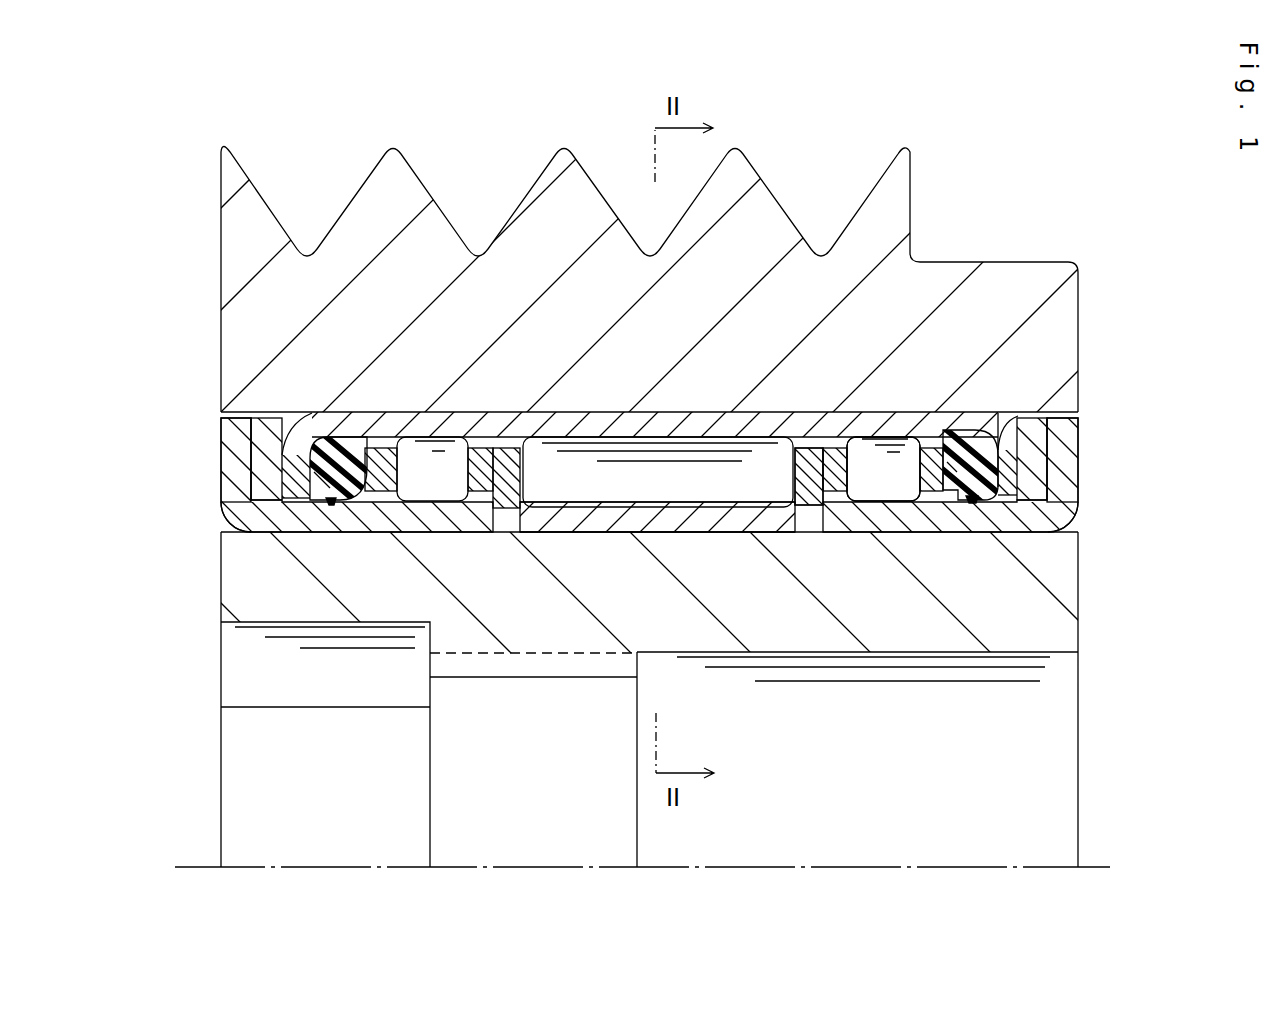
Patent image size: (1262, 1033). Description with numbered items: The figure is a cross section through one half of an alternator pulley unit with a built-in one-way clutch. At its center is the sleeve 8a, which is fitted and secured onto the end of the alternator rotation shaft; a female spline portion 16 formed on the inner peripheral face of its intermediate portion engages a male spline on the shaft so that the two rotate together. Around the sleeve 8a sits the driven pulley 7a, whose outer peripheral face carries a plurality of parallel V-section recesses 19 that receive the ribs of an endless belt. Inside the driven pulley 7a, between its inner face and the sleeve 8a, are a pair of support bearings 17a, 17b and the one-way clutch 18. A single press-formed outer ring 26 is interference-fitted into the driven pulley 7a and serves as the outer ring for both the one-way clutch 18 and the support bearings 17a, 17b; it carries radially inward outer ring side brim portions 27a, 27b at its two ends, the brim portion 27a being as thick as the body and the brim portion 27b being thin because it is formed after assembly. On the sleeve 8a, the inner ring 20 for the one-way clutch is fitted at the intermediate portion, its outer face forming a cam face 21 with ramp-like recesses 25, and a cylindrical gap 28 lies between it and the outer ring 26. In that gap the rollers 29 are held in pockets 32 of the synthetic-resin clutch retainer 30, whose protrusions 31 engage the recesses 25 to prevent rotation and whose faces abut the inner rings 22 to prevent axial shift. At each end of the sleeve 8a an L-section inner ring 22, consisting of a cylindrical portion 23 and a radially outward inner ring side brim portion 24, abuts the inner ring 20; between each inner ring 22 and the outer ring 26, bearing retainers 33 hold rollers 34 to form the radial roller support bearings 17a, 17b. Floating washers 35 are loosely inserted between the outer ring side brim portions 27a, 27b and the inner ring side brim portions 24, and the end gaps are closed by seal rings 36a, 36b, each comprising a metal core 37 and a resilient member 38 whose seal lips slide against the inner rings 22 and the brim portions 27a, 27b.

The driven pulley 7a is at (903, 223).
The recesses 19 is at (260, 192).
The support bearing 17a is at (408, 414).
The pockets 32 is at (790, 470).
The cylindrical portion 23 is at (422, 514).
The inner ring side brim portion 24 is at (235, 447).
The inner rings 22 is at (233, 502).
The floating washers 35 is at (267, 500).
The outer ring side brim portion 27a is at (303, 420).
The outer ring side brim portion 27b is at (1012, 442).
The seal ring 36a is at (333, 420).
The seal ring 36b is at (962, 424).
The metal core 37 is at (330, 422).
The resilient member 38 is at (332, 503).
The rollers 34 is at (447, 450).
The outer ring 26 is at (408, 450).
The cylindrical gap 28 is at (815, 450).
The bearing retainers 33 is at (488, 456).
The protrusions 31 is at (508, 497).
The clutch retainer 30 is at (806, 500).
The rollers 29 is at (592, 450).
The one-way clutch 18 is at (586, 496).
The recesses 25 is at (549, 506).
The inner ring for the one-way clutch 20 is at (628, 522).
The cam face 21 is at (745, 506).
The sleeve 8a is at (963, 640).
The support bearing 17b is at (897, 532).
The female spline portion 16 is at (473, 678).